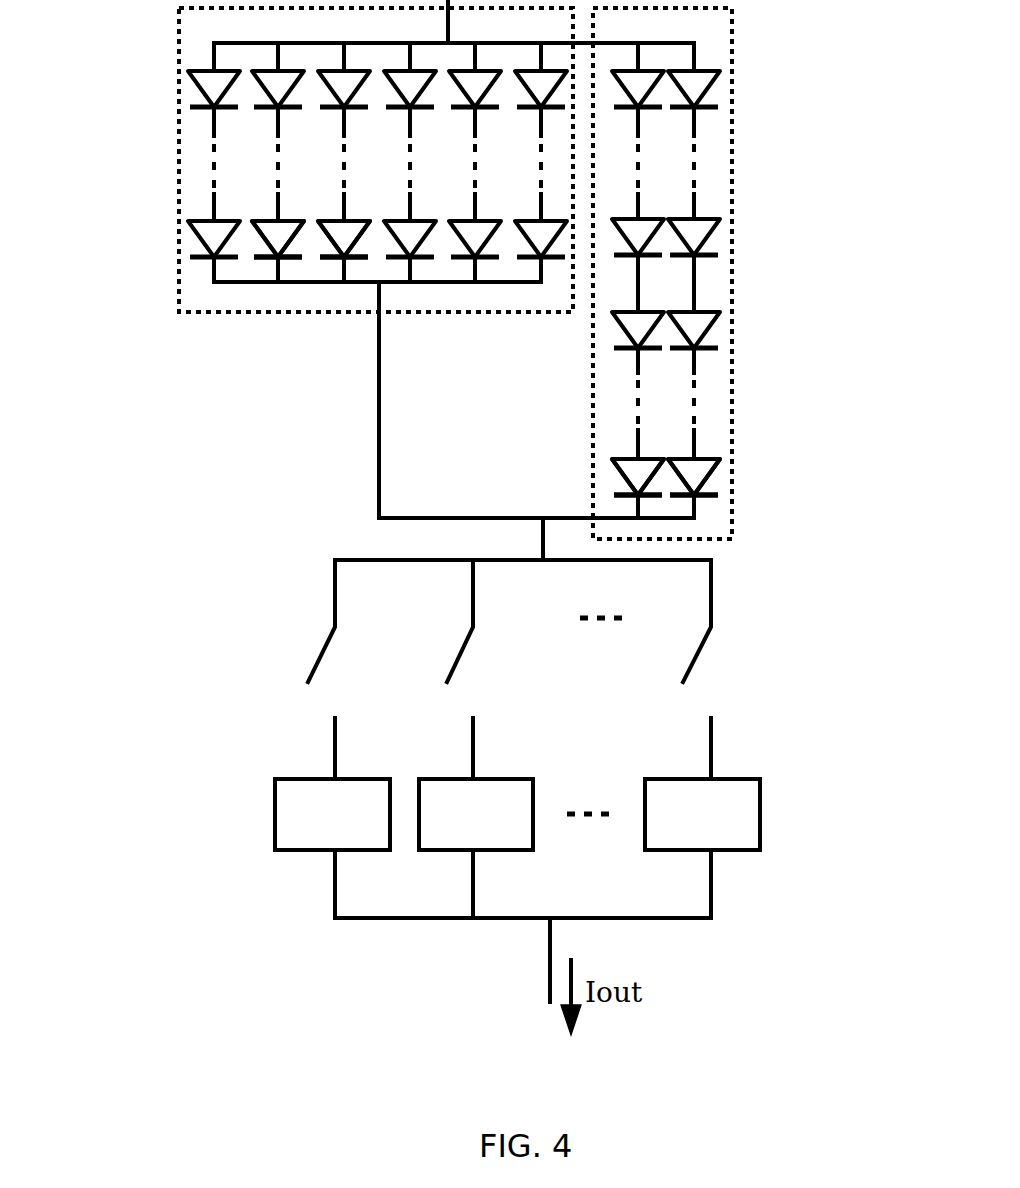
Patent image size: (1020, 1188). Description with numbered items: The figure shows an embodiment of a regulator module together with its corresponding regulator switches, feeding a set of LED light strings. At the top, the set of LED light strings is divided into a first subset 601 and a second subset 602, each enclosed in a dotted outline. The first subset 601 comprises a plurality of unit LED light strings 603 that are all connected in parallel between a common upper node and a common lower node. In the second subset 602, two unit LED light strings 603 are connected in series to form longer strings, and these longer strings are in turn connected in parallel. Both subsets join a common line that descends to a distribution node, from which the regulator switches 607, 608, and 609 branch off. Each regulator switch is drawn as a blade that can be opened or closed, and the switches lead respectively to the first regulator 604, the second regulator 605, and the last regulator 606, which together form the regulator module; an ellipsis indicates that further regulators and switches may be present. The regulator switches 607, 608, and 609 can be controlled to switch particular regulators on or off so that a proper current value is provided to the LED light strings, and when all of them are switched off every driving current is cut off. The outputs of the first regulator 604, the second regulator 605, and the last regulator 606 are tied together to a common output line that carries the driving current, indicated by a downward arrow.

The first subset 601 is at (175, 167).
The second subset 602 is at (733, 178).
The unit LED light string 603 is at (278, 182).
The regulator REG 0 604 is at (290, 805).
The regulator REG 1 605 is at (460, 840).
The regulator REG 2 606 is at (712, 838).
The regulator switch 607 is at (300, 655).
The regulator switch 608 is at (455, 652).
The regulator switch 609 is at (712, 645).